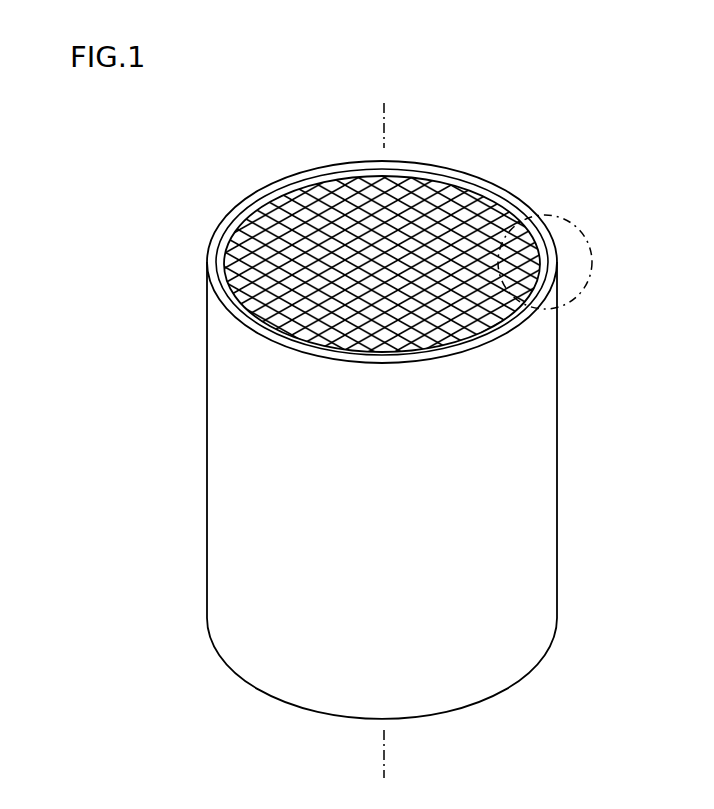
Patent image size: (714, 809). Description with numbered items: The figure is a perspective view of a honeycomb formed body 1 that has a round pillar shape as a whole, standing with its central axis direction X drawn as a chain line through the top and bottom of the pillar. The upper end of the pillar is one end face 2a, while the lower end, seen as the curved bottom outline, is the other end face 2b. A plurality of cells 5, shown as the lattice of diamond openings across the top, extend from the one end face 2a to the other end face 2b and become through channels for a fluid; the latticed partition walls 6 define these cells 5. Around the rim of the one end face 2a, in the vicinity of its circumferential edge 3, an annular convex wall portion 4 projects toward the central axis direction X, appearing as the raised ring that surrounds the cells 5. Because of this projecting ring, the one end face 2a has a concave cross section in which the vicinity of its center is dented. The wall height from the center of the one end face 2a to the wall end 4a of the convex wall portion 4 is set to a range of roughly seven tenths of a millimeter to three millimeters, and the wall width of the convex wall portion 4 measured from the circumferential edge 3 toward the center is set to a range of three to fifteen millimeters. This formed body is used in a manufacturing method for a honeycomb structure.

The honeycomb formed body 1 is at (517, 125).
The one end face 2a is at (512, 192).
The other end face 2b is at (515, 687).
The circumferential edge 3 is at (422, 153).
The convex wall portion 4 is at (382, 244).
The wall end 4a is at (481, 166).
The cells 5 is at (326, 206).
The partition walls 6 is at (263, 207).
The central axis direction X is at (388, 747).